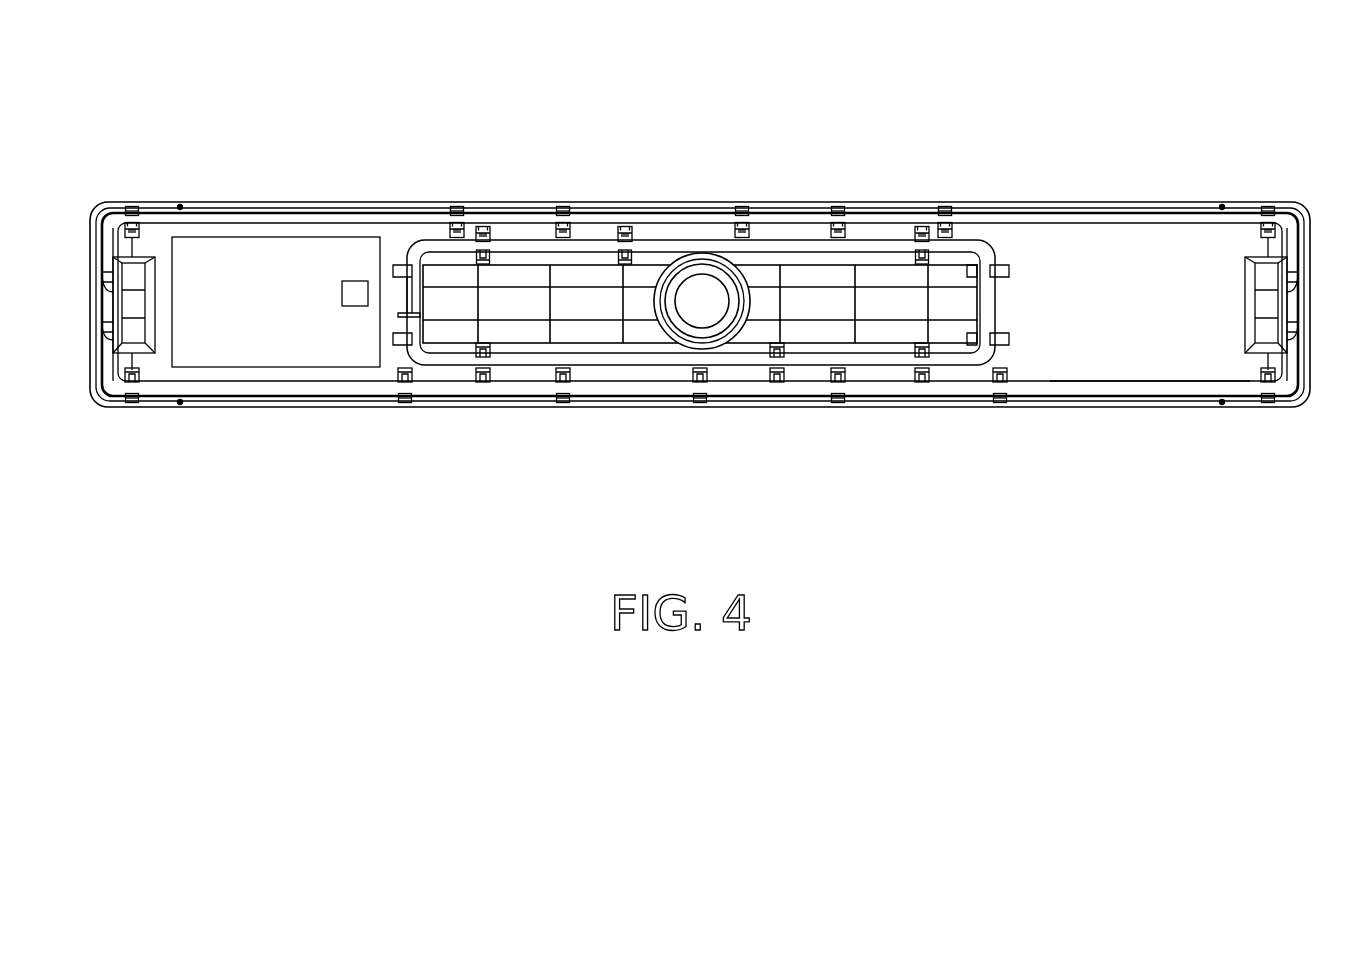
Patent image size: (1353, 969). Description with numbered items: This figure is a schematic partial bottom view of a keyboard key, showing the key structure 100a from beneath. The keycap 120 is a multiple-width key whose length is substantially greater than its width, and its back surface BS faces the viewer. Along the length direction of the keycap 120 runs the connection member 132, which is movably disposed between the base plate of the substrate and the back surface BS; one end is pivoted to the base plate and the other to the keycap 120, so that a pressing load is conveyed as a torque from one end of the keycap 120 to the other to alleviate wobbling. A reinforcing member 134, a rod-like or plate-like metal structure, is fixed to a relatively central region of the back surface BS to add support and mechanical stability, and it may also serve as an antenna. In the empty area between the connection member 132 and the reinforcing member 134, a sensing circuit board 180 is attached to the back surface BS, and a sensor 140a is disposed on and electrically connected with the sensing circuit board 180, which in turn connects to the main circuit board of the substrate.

The key structure 100a is at (859, 119).
The keycap 120 is at (518, 204).
The connection member 132 is at (1090, 220).
The reinforcing member 134 is at (962, 243).
The sensor 140a is at (357, 280).
The sensing circuit board 180 is at (247, 236).
The back surface BS is at (1129, 385).